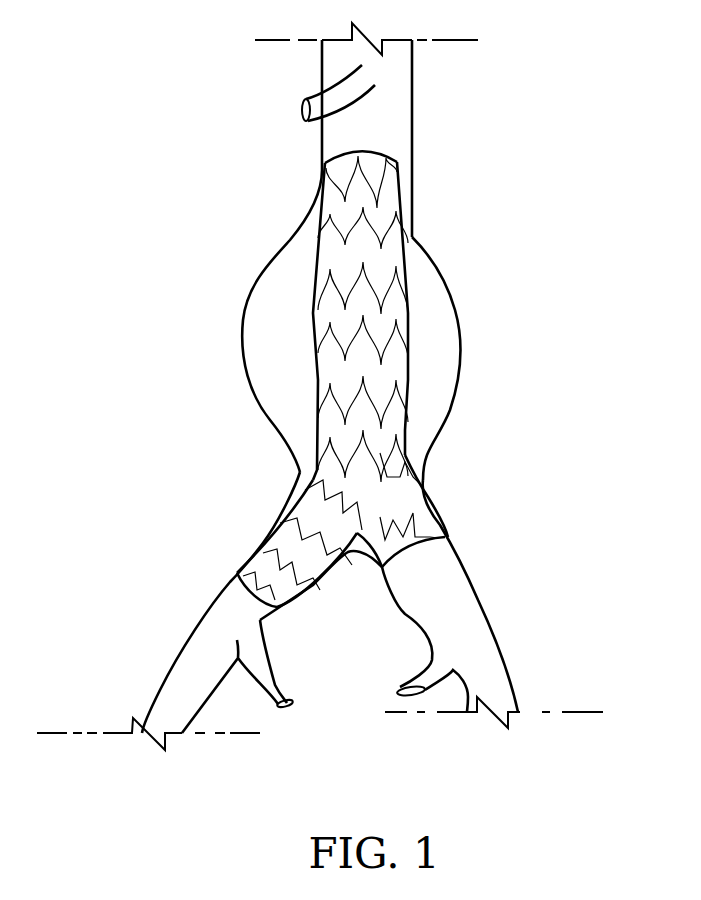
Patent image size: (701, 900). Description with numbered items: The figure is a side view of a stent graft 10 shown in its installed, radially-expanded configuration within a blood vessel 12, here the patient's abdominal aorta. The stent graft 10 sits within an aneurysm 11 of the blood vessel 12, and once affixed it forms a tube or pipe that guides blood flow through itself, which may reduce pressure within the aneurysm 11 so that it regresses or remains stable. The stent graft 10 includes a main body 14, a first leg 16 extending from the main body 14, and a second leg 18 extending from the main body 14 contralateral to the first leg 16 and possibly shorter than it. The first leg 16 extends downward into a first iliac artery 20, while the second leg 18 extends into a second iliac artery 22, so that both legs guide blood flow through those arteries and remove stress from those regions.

The stent graft 10 is at (393, 298).
The aneurysm 11 is at (455, 392).
The blood vessel 12 is at (397, 90).
The main body 14 is at (347, 315).
The first leg 16 is at (273, 560).
The second leg 18 is at (440, 537).
The first iliac artery 20 is at (213, 627).
The second iliac artery 22 is at (482, 633).